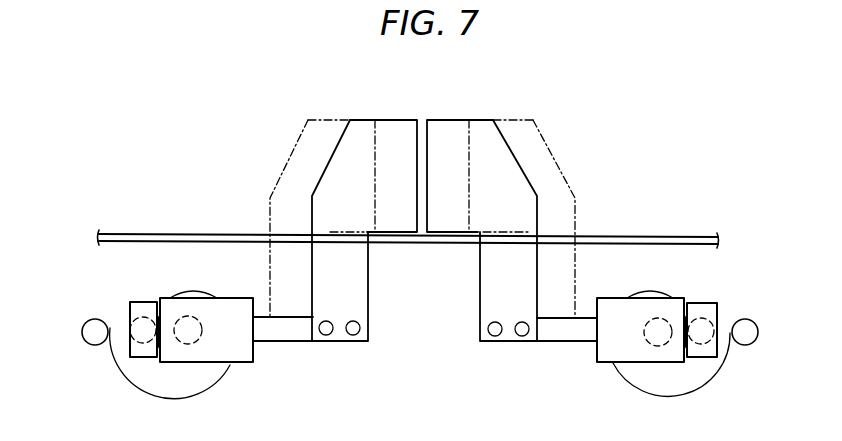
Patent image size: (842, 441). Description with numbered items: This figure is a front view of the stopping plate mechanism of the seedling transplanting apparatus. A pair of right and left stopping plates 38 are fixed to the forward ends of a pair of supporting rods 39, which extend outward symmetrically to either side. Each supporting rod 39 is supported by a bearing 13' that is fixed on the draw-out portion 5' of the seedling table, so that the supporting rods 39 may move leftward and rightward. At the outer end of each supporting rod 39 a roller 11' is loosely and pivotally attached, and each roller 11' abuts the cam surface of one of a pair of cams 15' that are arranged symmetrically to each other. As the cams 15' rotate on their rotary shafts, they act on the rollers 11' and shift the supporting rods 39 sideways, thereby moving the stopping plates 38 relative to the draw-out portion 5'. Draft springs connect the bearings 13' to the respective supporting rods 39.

The draw-out portion 5' is at (408, 215).
The roller 11' is at (424, 306).
The bearing 13' is at (422, 307).
The cam 15' is at (420, 357).
The stopping plate 38 is at (303, 121).
The supporting rod 39 is at (292, 333).